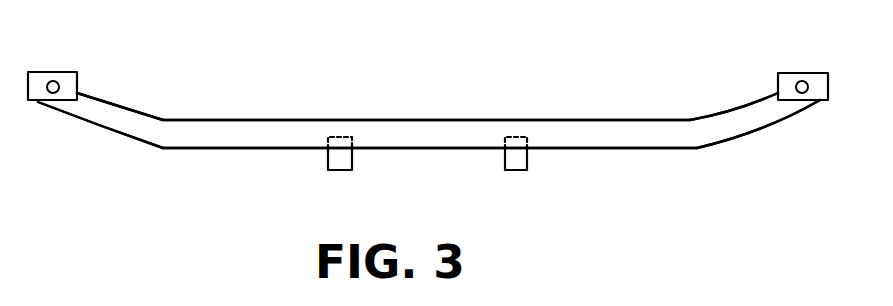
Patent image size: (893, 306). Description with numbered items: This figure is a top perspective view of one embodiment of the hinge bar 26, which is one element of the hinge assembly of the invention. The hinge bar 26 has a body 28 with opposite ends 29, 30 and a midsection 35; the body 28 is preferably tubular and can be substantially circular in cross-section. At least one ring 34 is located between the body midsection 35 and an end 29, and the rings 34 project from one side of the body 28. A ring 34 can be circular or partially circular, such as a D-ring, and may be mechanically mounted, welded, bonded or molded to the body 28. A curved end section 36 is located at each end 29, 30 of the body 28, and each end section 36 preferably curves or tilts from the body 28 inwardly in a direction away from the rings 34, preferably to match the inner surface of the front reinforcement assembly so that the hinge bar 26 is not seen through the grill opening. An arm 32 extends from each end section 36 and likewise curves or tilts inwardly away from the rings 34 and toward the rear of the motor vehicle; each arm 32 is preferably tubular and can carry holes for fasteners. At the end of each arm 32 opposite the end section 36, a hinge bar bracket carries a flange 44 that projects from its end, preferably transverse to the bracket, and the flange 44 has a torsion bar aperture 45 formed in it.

The hinge bar 26 is at (267, 138).
The body 28 is at (555, 138).
The end 29 is at (163, 118).
The end 30 is at (693, 117).
The arm 32 is at (127, 127).
The ring 34 is at (337, 165).
The midsection 35 is at (443, 115).
The curved end section 36 is at (715, 145).
The flange 44 is at (785, 78).
The torsion bar aperture 45 is at (805, 92).